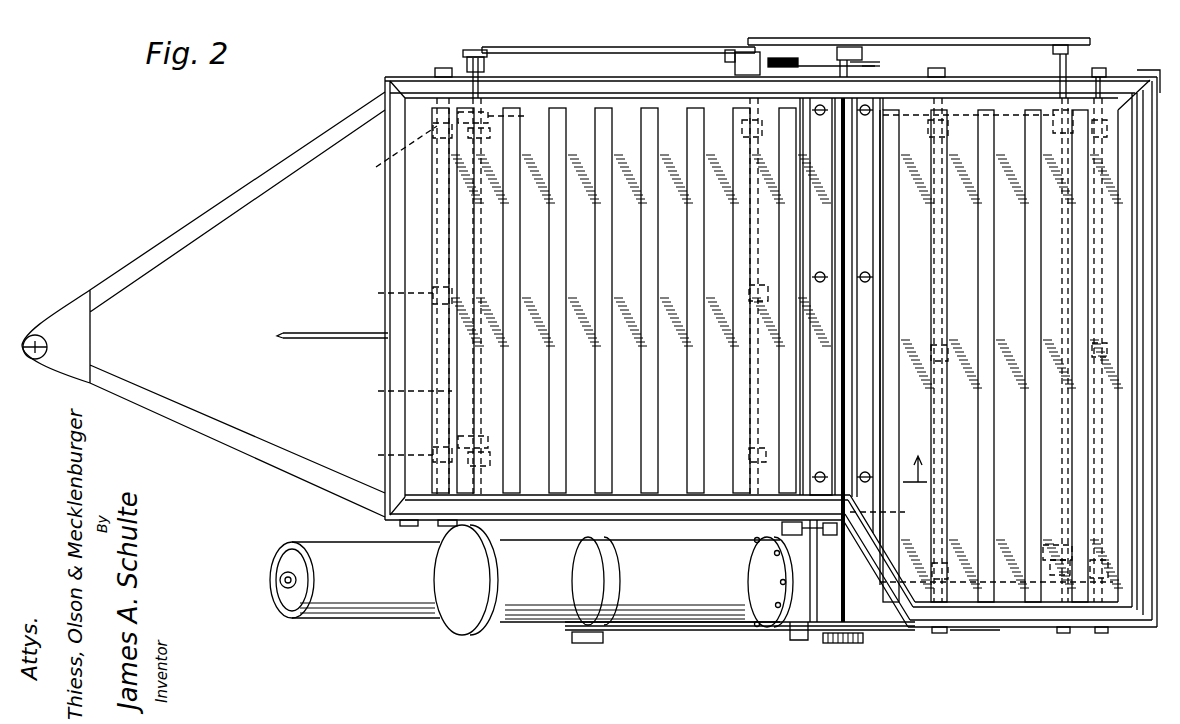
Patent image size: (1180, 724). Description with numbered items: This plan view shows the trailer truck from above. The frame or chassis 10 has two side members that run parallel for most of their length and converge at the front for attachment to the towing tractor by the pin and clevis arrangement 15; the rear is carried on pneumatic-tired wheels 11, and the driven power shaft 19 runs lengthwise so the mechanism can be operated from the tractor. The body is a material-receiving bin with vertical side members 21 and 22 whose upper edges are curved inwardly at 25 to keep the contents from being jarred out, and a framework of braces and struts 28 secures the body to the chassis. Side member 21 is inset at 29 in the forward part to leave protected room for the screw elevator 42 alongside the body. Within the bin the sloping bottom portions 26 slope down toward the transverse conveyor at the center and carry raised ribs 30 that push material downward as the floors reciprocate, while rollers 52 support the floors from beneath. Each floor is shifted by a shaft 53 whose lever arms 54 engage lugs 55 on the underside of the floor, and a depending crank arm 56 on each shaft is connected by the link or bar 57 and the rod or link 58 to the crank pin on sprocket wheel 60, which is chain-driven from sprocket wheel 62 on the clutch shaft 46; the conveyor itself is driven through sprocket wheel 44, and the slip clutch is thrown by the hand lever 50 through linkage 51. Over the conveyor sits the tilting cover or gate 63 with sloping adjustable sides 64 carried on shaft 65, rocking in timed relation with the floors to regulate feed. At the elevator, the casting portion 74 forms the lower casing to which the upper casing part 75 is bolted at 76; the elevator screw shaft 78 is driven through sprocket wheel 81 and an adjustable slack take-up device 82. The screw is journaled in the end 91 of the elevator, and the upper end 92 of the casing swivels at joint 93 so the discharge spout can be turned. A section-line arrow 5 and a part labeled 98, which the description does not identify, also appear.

The section arrow 5 is at (915, 478).
The frame or chassis 10 is at (212, 206).
The pneumatic-tired wheels 11 is at (970, 77).
The pin and clevis arrangement 15 is at (68, 305).
The driven power shaft 19 is at (298, 342).
The vertical side member 21 is at (1000, 630).
The vertical side member 22 is at (625, 78).
The inwardly curved upper edges 25 is at (388, 235).
The sloping bottom portions 26 is at (575, 312).
The framework of braces and struts 28 is at (1120, 630).
The inset portion 29 is at (848, 574).
The raised ribs 30 is at (595, 400).
The screw elevator 42 is at (702, 604).
The sprocket wheel 44 is at (852, 58).
The short shaft 46 is at (838, 48).
The hand lever 50 is at (833, 537).
The linkage 51 is at (722, 478).
The rollers 52 is at (1118, 533).
The shaft 53 is at (484, 74).
The lever arms 54 is at (488, 128).
The lugs 55 is at (480, 432).
The depending crank or lever arm 56 is at (475, 50).
The link or bar 57 is at (620, 48).
The rod or link 58 is at (950, 39).
The sprocket wheel 60 is at (735, 60).
The sprocket wheel 62 is at (788, 58).
The tilting cover or gate 63 is at (800, 192).
The sloping adjustable sides 64 is at (803, 233).
The shaft 65 is at (872, 66).
The casting portion 74 is at (795, 632).
The upper part of tubular casing 75 is at (540, 620).
The bolted joint 76 is at (752, 630).
The elevator screw shaft 78 is at (283, 582).
The sprocket wheel 81 is at (812, 634).
The adjustable slack take-up device 82 is at (850, 642).
The end of the elevator 91 is at (285, 615).
The upper end of elevator casing 92 is at (378, 616).
The swivel joint 93 is at (470, 636).
The lower rail 98 is at (720, 632).